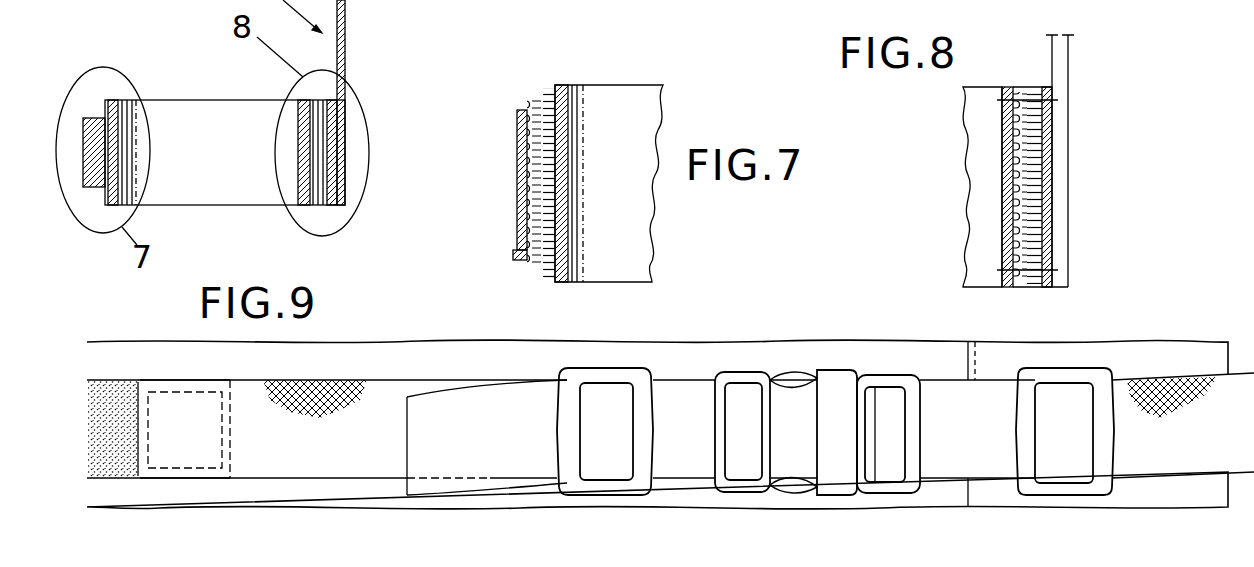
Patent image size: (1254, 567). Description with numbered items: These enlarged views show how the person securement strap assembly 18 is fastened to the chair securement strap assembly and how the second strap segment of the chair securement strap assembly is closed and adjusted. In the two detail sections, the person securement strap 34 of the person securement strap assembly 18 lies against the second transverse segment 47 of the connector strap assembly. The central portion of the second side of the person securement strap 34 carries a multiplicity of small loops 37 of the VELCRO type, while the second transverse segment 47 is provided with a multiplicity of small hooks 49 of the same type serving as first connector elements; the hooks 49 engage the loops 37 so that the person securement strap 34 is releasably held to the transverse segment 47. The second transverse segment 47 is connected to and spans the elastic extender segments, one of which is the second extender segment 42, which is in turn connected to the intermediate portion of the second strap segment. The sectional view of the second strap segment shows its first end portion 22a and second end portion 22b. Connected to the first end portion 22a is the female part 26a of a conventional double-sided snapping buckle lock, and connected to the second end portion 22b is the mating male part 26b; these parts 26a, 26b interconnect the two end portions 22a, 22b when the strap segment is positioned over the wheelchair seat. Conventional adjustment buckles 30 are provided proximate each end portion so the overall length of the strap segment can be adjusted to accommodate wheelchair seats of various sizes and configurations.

In FIG. 6, the person securement strap assembly 18 is at (218, 94).
In FIG. 7, the person securement strap assembly 18 is at (636, 245).
In FIG. 8, the person securement strap assembly 18 is at (980, 243).
In FIG. 6, the second transverse segment 47 is at (115, 118).
In FIG. 7, the second transverse segment 47 is at (562, 128).
In FIG. 8, the second transverse segment 47 is at (1046, 245).
In FIG. 6, the person securement strap 34 is at (90, 167).
In FIG. 7, the person securement strap 34 is at (517, 150).
In FIG. 8, the person securement strap 34 is at (1002, 203).
In FIG. 7, the small loops 37 is at (553, 177).
In FIG. 8, the small loops 37 is at (1013, 145).
In FIG. 7, the small hooks 49 is at (557, 198).
In FIG. 8, the small hooks 49 is at (1035, 222).
In FIG. 8, the second extender segment 42 is at (1060, 50).
In FIG. 9, the first end portion of second strap segment 22a is at (387, 393).
In FIG. 9, the second end portion of second strap segment 22b is at (933, 390).
In FIG. 9, the adjustment buckle 30 is at (603, 377).
In FIG. 9, the female part of second connector 26a is at (732, 380).
In FIG. 9, the male part of second connector 26b is at (870, 380).